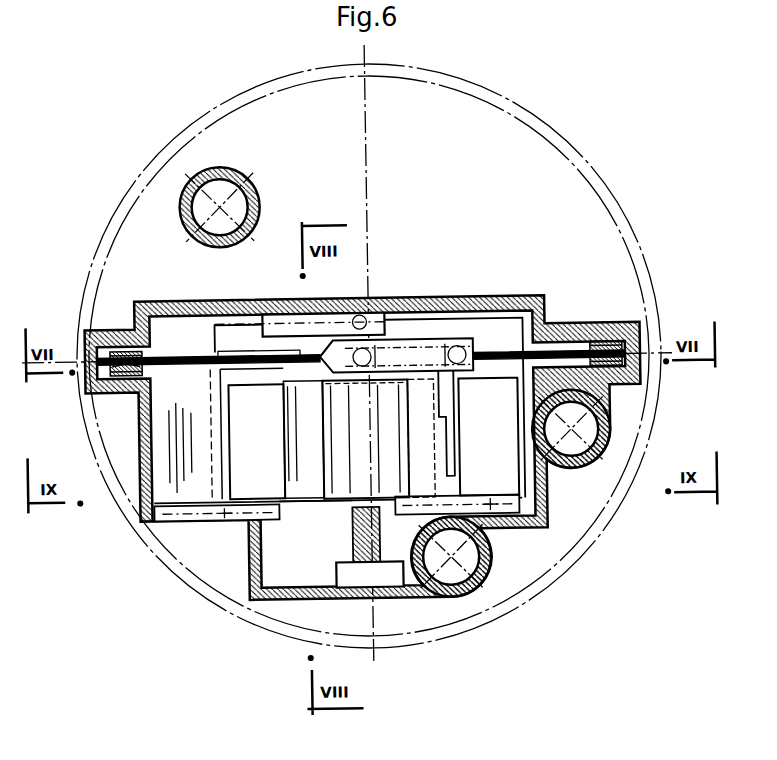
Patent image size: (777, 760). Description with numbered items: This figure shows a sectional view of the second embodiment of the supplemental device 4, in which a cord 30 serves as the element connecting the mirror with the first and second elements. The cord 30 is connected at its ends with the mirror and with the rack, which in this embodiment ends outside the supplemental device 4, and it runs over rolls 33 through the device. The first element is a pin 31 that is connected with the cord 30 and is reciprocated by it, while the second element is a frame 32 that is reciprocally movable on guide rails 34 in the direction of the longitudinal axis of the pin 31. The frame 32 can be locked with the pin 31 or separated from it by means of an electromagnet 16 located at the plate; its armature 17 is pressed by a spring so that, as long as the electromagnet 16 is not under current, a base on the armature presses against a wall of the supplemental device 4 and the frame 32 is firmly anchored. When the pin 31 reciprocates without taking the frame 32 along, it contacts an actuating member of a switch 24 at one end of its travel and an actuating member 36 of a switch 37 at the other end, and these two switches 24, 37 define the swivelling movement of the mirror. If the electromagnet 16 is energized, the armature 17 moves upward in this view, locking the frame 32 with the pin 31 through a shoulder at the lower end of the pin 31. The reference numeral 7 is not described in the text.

The supplemental device 4 is at (494, 300).
The mounting plate 7 is at (599, 188).
The electromagnet 16 is at (291, 499).
The armature 17 is at (338, 482).
The switch 24 is at (265, 453).
The cord 30 is at (170, 359).
The pin 31 is at (414, 341).
The frame 32 is at (342, 558).
The rolls 33 is at (120, 326).
The guide rails 34 is at (293, 326).
The actuating member 36 is at (447, 406).
The switch 37 is at (497, 455).